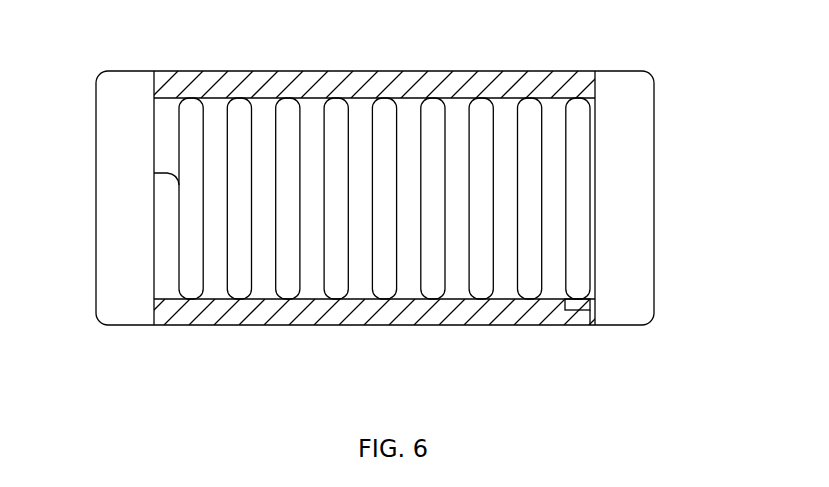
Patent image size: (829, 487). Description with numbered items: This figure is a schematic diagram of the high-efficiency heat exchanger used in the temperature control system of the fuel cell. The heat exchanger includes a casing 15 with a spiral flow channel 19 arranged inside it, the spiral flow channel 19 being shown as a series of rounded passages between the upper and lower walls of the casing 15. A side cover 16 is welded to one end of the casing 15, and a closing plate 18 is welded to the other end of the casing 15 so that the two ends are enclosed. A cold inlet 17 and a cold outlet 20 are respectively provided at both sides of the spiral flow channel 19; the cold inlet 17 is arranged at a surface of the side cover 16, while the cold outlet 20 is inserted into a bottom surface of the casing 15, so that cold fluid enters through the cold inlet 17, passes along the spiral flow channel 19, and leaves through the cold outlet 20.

The casing 15 is at (502, 85).
The side cover 16 is at (127, 195).
The cold inlet 17 is at (173, 206).
The closing plate 18 is at (643, 157).
The spiral flow channel 19 is at (277, 273).
The cold outlet 20 is at (595, 318).